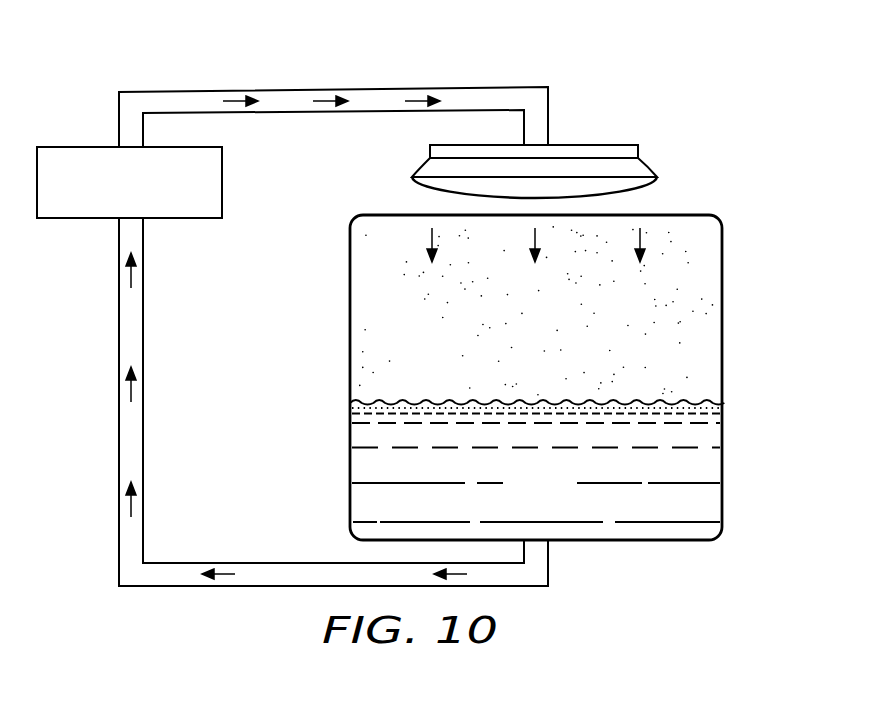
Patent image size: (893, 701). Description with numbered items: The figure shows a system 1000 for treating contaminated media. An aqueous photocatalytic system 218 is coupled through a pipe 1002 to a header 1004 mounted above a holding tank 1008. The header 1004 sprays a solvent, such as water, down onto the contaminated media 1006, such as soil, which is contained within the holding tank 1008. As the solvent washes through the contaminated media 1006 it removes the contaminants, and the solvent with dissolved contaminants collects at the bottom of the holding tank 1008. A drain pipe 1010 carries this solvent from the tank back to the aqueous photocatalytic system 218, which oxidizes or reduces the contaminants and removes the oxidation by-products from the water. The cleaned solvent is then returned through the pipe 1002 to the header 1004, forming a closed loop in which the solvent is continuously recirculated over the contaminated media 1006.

The system for treating contaminated media 1000 is at (689, 78).
The pipe 1002 is at (373, 89).
The header 1004 is at (584, 144).
The contaminated media 1006 is at (566, 493).
The holding tank 1008 is at (722, 336).
The drain pipe 1010 is at (119, 393).
The photocatalytic system 218 is at (73, 146).